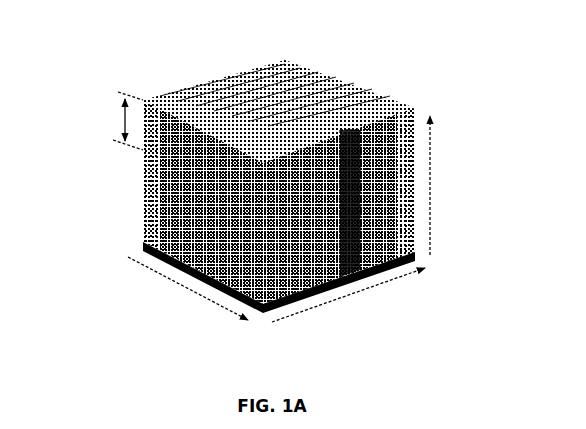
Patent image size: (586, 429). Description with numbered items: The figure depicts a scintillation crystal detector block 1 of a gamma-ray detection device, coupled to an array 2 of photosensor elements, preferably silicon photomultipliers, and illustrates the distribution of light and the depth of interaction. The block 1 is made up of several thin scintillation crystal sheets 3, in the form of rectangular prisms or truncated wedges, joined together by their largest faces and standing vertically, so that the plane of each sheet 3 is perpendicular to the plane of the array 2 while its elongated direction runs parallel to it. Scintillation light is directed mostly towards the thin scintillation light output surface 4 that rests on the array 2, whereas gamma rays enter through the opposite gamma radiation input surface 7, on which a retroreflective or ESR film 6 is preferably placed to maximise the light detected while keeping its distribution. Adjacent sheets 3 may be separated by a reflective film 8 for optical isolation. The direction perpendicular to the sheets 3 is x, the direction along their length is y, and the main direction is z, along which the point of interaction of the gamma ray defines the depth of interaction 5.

The scintillation crystal detector block 1 is at (257, 173).
The array of photosensor elements 2 is at (184, 268).
The scintillation crystal sheets 3 is at (387, 219).
The scintillation light output surface 4 is at (371, 278).
The depth of interaction (DOI) 5 is at (118, 117).
The retroreflective (or ESR) film 6 is at (366, 100).
The gamma radiation input surface 7 is at (255, 94).
The reflective film 8 is at (352, 178).